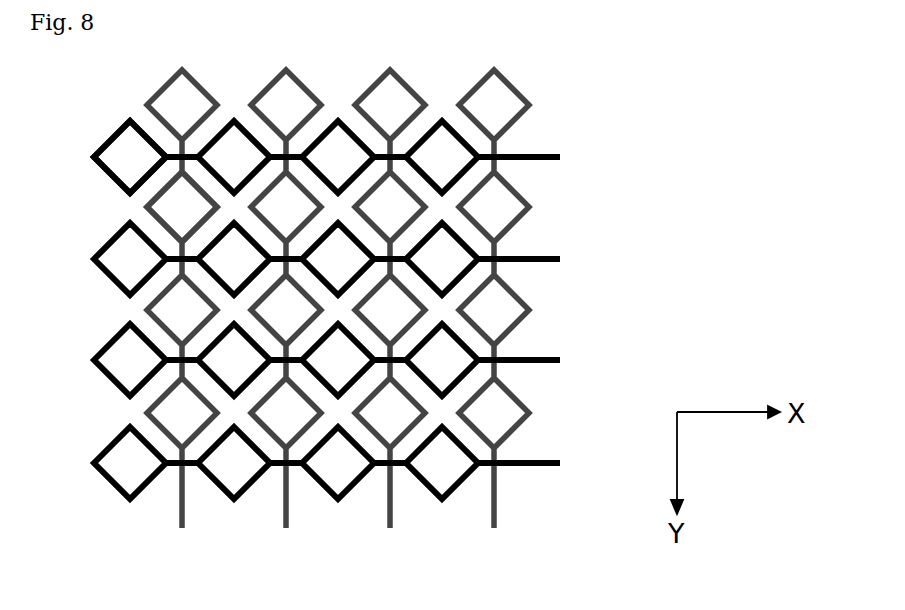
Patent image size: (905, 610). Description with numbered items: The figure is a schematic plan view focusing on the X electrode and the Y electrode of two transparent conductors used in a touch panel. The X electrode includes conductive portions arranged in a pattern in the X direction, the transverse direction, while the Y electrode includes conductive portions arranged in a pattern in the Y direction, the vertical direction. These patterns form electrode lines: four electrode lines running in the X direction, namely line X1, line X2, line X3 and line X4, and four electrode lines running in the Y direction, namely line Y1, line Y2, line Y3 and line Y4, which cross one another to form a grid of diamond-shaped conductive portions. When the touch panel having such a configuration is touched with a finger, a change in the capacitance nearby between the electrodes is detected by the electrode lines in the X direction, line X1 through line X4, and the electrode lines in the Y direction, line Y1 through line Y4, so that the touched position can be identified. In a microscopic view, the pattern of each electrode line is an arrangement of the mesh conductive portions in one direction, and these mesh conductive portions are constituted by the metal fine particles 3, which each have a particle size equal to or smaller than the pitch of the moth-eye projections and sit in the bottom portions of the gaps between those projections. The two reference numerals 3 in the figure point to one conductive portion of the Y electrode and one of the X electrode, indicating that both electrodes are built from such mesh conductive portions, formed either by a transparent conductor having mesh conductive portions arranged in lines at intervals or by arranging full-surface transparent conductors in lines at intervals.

The metal fine particles 3 is at (122, 157).
The line X1 is at (182, 319).
The line X2 is at (286, 319).
The line X3 is at (390, 319).
The line X4 is at (494, 319).
The line Y1 is at (350, 157).
The line Y2 is at (350, 259).
The line Y3 is at (350, 360).
The line Y4 is at (350, 463).